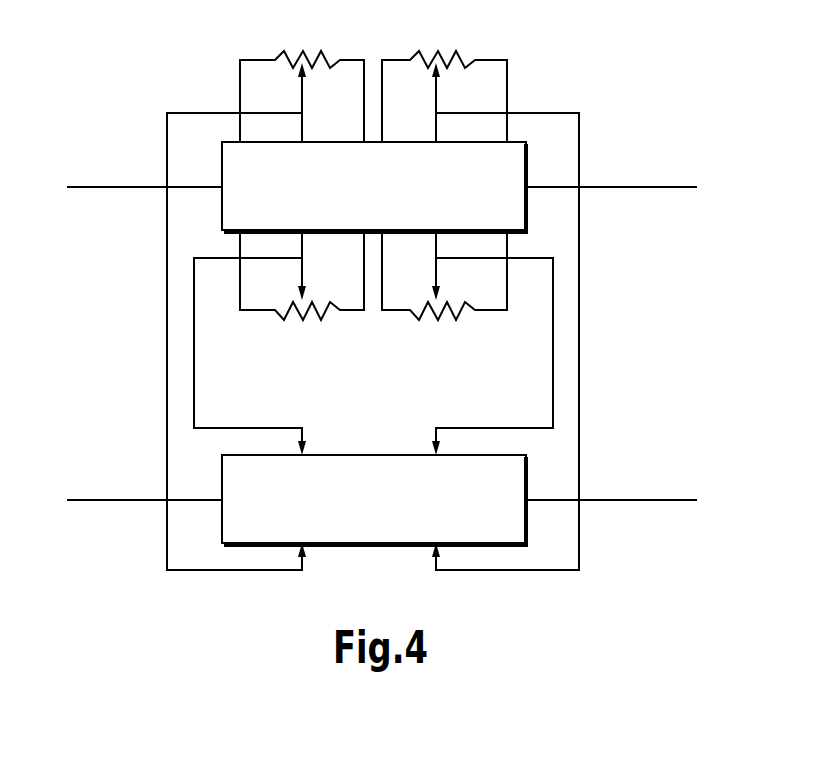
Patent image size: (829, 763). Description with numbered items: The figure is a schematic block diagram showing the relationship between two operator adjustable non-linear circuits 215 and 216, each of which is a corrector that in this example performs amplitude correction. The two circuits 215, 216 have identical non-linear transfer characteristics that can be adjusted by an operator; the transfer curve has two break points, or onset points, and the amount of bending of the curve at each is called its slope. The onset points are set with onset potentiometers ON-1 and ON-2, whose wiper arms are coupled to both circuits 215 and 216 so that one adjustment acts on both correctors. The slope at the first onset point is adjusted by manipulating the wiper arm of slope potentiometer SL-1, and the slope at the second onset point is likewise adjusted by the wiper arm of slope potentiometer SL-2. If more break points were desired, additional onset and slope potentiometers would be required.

The non-linear circuit 215 is at (347, 195).
The non-linear circuit 216 is at (347, 508).
The onset potentiometer ON-1 is at (307, 50).
The onset potentiometer ON-2 is at (437, 50).
The slope potentiometer SL-1 is at (303, 318).
The slope potentiometer SL-2 is at (448, 318).